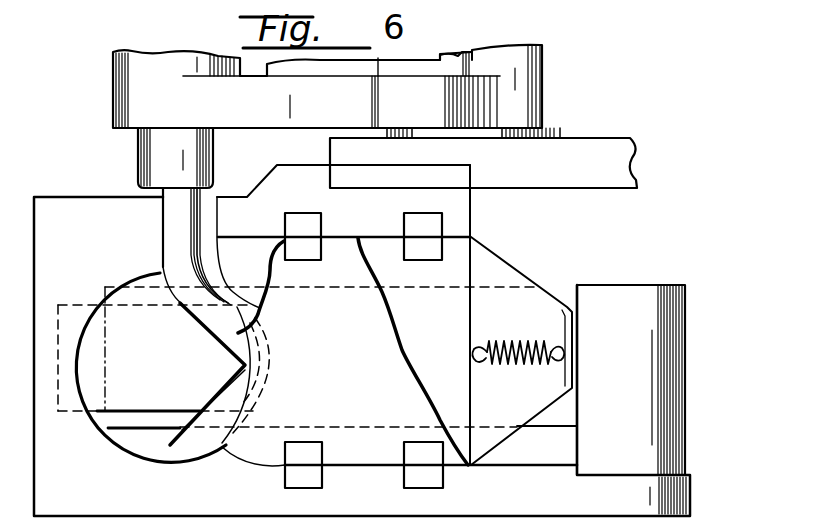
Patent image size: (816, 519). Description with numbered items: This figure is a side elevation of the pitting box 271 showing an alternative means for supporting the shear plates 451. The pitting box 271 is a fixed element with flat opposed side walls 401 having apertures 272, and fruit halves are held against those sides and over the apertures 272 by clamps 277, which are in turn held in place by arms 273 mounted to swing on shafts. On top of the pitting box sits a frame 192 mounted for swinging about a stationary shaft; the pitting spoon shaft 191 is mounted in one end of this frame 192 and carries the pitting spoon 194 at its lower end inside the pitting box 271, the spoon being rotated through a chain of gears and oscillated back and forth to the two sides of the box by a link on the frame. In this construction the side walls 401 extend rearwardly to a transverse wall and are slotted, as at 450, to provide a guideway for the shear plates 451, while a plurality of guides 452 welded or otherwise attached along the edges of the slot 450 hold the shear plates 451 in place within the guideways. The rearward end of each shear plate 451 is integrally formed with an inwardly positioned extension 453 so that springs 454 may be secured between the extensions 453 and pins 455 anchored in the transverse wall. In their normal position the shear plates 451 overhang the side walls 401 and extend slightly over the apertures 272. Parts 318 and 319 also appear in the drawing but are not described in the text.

The pitting spoon shaft 191 is at (163, 152).
The frame 192 is at (425, 65).
The pitting spoon 194 is at (228, 330).
The pitting box 271 is at (57, 197).
The apertures 272 is at (84, 358).
The arms 273 is at (560, 296).
The clamps 277 is at (158, 386).
The flange 318 is at (457, 68).
The plate 319 is at (367, 93).
The side walls 401 is at (88, 479).
The slot 450 is at (375, 453).
The shear plates 451 is at (356, 342).
The guides 452 is at (300, 247).
The extension 453 is at (562, 349).
The springs 454 is at (528, 364).
The pins 455 is at (479, 361).